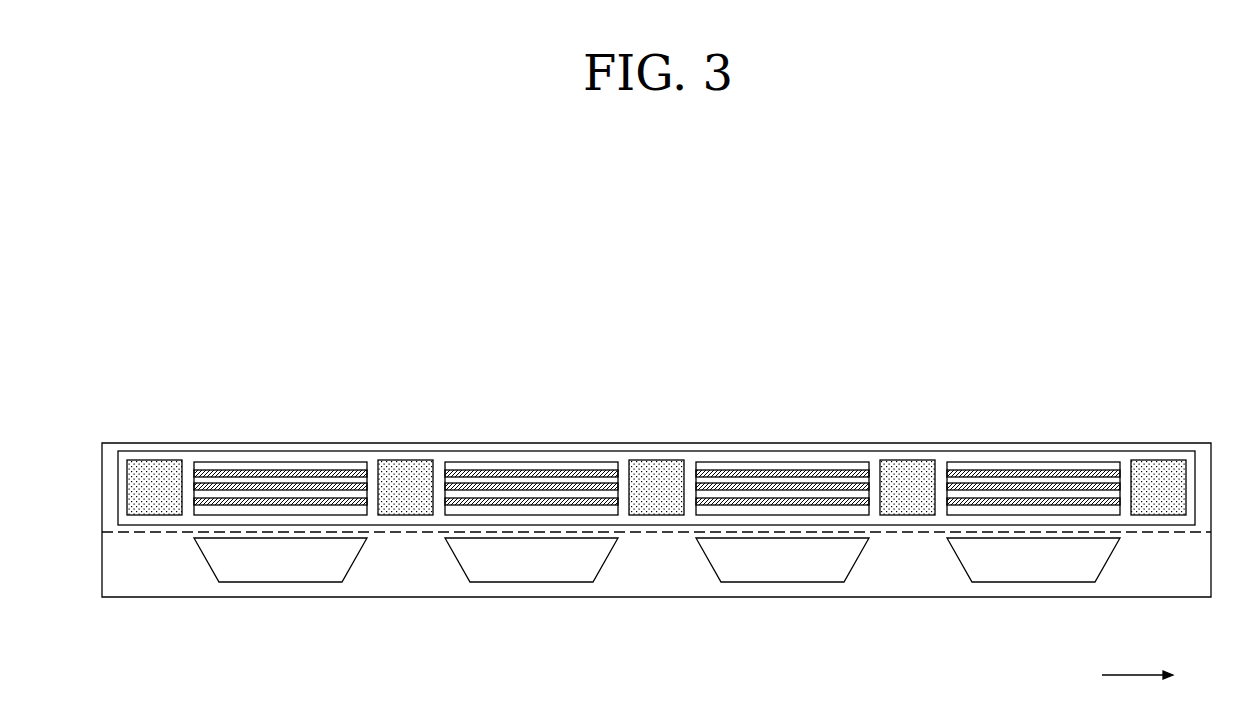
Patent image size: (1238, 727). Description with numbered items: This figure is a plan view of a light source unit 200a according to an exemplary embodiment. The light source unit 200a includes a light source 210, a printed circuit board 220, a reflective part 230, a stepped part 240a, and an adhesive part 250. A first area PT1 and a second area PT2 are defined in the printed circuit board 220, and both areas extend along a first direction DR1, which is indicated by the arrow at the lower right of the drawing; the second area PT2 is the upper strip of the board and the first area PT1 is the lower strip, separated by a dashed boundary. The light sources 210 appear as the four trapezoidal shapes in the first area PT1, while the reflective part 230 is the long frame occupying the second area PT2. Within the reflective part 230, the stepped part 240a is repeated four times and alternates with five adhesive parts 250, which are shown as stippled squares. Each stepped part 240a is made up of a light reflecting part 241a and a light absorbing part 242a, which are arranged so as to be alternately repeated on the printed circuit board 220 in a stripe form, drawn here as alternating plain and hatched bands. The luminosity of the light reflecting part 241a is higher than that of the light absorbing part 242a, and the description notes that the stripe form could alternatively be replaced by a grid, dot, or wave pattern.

The light source unit 200a is at (655, 469).
The light source 210 is at (282, 567).
The printed circuit board 220 is at (654, 522).
The reflective part 230 is at (170, 448).
The stepped part 240a is at (657, 422).
The light reflecting part 241a is at (247, 467).
The light absorbing part 242a is at (312, 467).
The adhesive part 250 is at (405, 473).
The first area PT1 is at (143, 585).
The second area PT2 is at (110, 450).
The first direction DR1 is at (1155, 676).